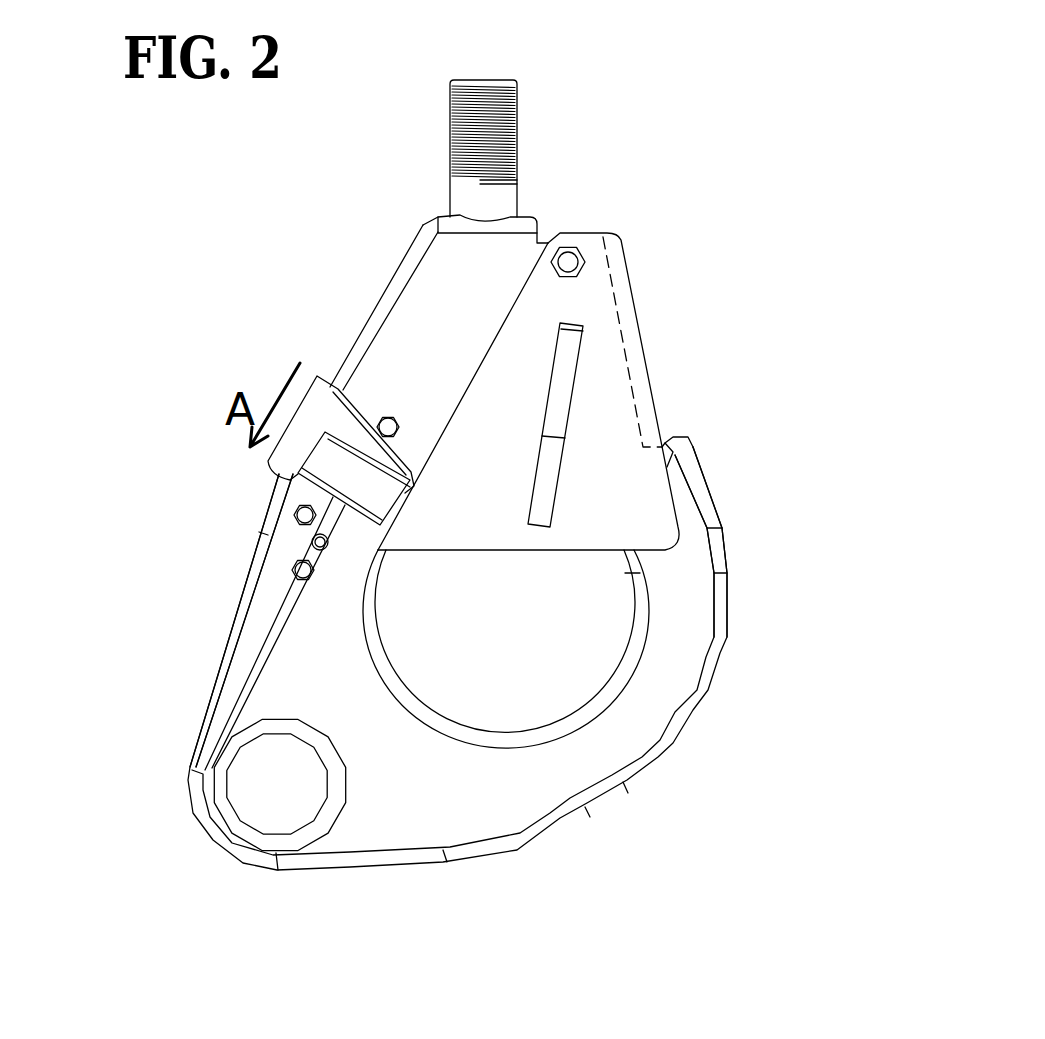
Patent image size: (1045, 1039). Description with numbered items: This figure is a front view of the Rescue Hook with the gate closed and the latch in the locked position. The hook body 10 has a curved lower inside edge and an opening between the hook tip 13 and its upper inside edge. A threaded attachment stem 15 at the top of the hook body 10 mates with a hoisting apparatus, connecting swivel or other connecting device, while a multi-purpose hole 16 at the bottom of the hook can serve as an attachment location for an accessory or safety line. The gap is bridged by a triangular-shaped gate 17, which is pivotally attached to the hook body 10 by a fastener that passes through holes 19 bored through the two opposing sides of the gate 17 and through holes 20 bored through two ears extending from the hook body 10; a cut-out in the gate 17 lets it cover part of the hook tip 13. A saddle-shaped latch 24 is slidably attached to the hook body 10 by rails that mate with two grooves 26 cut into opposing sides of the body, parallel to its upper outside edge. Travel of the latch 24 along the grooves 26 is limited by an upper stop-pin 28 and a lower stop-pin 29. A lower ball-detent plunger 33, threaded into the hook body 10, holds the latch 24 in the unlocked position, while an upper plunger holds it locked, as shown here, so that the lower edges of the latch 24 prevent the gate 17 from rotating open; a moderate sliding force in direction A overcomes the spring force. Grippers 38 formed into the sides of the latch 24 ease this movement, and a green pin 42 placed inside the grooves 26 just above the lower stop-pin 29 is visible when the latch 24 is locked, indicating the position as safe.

The hook body 10 is at (415, 780).
The hook tip 13 is at (680, 450).
The threaded attachment stem 15 is at (487, 113).
The multi-purpose hole 16 is at (273, 785).
The gate 17 is at (617, 370).
The holes 19 is at (670, 186).
The holes 20 is at (570, 258).
The latch 24 is at (313, 410).
The grooves 26 is at (250, 660).
The upper stop-pin 28 is at (388, 416).
The lower stop-pin 29 is at (294, 568).
The lower ball-detent plunger 33 is at (295, 509).
The grippers 38 is at (357, 472).
The green pin 42 is at (312, 540).